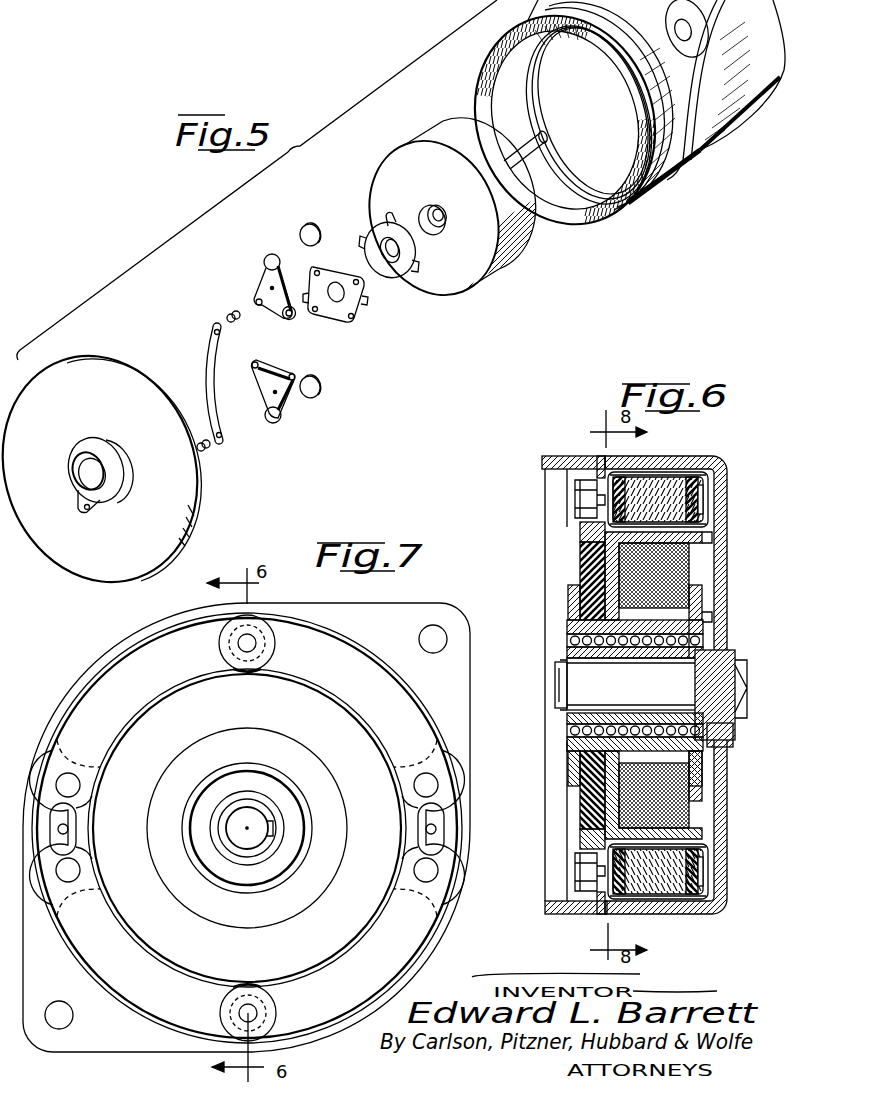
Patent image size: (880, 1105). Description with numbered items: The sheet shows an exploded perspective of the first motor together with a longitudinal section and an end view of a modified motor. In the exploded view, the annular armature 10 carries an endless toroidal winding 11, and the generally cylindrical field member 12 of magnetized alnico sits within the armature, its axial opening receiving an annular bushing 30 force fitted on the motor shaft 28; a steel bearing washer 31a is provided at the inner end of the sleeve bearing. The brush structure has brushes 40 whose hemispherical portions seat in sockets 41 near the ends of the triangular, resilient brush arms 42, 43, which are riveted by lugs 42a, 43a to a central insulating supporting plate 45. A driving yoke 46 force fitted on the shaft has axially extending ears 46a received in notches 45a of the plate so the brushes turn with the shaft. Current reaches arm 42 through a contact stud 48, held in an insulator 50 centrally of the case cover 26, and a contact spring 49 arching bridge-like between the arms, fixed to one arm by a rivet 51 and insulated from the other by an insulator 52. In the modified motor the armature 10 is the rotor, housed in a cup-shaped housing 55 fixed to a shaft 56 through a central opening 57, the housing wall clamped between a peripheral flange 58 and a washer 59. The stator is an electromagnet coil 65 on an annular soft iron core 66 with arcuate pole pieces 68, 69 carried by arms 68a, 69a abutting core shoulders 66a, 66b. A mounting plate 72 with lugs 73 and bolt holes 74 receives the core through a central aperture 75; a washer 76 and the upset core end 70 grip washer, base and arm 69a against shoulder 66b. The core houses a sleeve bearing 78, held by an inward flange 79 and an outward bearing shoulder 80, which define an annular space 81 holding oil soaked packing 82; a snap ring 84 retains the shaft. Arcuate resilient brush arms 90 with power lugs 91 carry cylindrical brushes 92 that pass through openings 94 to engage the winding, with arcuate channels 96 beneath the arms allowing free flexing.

In FIG. 5, the armature 10 is at (622, 202).
In FIG. 6, the armature 10 is at (672, 476).
In FIG. 5, the toroidal winding 11 is at (508, 37).
In FIG. 6, the toroidal winding 11 is at (648, 472).
In FIG. 5, the field member 12 is at (527, 238).
In FIG. 5, the case cover 26 is at (105, 388).
In FIG. 5, the motor shaft 28 is at (544, 140).
In FIG. 5, the annular bushing 30 is at (425, 215).
In FIG. 5, the bearing washer 31a is at (698, 50).
In FIG. 5, the brush 40 is at (306, 226).
In FIG. 5, the socket 41 is at (266, 258).
In FIG. 5, the brush arm 42 is at (288, 410).
In FIG. 5, the lug 42a is at (262, 372).
In FIG. 5, the brush arm 43 is at (266, 281).
In FIG. 5, the lug 43a is at (287, 315).
In FIG. 5, the supporting plate 45 is at (343, 321).
In FIG. 5, the notch 45a is at (302, 290).
In FIG. 5, the driving yoke 46 is at (392, 275).
In FIG. 5, the ear 46a is at (362, 241).
In FIG. 5, the contact stud 48 is at (80, 480).
In FIG. 5, the contact spring 49 is at (208, 374).
In FIG. 5, the insulator 50 is at (112, 470).
In FIG. 5, the rivet 51 is at (207, 451).
In FIG. 5, the insulator 52 is at (228, 316).
In FIG. 6, the cup-shaped housing 55 is at (722, 465).
In FIG. 6, the shaft 56 is at (558, 688).
In FIG. 7, the shaft 56 is at (250, 846).
In FIG. 6, the central opening 57 is at (742, 698).
In FIG. 6, the peripheral flange 58 is at (734, 740).
In FIG. 6, the washer 59 is at (712, 622).
In FIG. 6, the coil 65 is at (692, 566).
In FIG. 6, the annular core 66 is at (654, 575).
In FIG. 7, the annular core 66 is at (248, 782).
In FIG. 6, the shoulder 66a is at (704, 600).
In FIG. 6, the shoulder 66b is at (654, 795).
In FIG. 6, the pole piece 68 is at (588, 832).
In FIG. 6, the arm 68a is at (704, 808).
In FIG. 6, the pole piece 69 is at (704, 537).
In FIG. 6, the arm 69a is at (582, 560).
In FIG. 6, the upset core end 70 is at (566, 750).
In FIG. 6, the mounting plate 72 is at (550, 458).
In FIG. 7, the mounting plate 72 is at (471, 852).
In FIG. 7, the lug 73 is at (398, 604).
In FIG. 7, the hole 74 is at (433, 653).
In FIG. 6, the aperture 75 is at (578, 745).
In FIG. 6, the washer 76 is at (573, 778).
In FIG. 7, the washer 76 is at (312, 762).
In FIG. 6, the sleeve bearing 78 is at (610, 660).
In FIG. 7, the sleeve bearing 78 is at (278, 830).
In FIG. 6, the flange 79 is at (565, 642).
In FIG. 6, the shoulder 80 is at (684, 642).
In FIG. 6, the annular space 81 is at (660, 656).
In FIG. 6, the oil soaked packing 82 is at (633, 642).
In FIG. 6, the snap ring 84 is at (556, 674).
In FIG. 7, the snap ring 84 is at (268, 838).
In FIG. 7, the brush arm 90 is at (336, 650).
In FIG. 7, the lug 91 is at (76, 828).
In FIG. 6, the brush 92 is at (578, 505).
In FIG. 7, the brush 92 is at (233, 645).
In FIG. 7, the opening 94 is at (247, 673).
In FIG. 7, the arcuate channel 96 is at (312, 672).